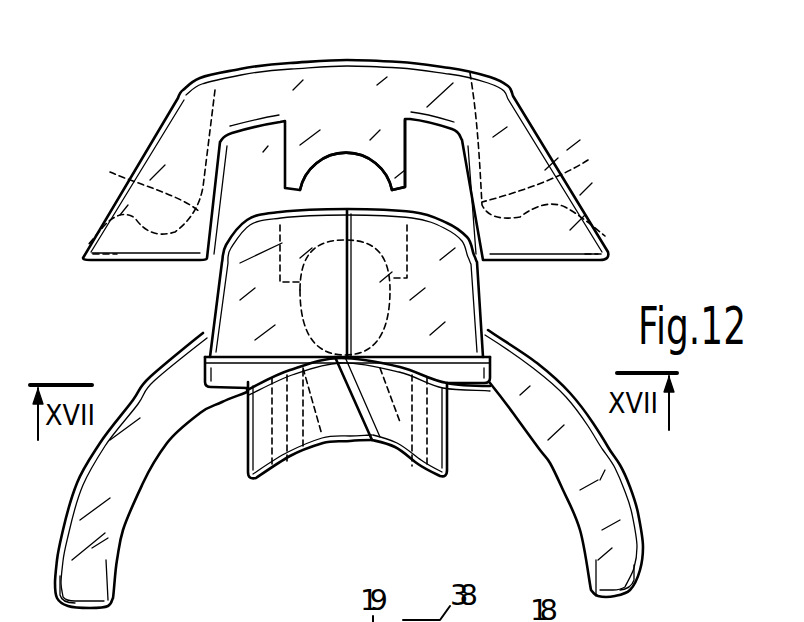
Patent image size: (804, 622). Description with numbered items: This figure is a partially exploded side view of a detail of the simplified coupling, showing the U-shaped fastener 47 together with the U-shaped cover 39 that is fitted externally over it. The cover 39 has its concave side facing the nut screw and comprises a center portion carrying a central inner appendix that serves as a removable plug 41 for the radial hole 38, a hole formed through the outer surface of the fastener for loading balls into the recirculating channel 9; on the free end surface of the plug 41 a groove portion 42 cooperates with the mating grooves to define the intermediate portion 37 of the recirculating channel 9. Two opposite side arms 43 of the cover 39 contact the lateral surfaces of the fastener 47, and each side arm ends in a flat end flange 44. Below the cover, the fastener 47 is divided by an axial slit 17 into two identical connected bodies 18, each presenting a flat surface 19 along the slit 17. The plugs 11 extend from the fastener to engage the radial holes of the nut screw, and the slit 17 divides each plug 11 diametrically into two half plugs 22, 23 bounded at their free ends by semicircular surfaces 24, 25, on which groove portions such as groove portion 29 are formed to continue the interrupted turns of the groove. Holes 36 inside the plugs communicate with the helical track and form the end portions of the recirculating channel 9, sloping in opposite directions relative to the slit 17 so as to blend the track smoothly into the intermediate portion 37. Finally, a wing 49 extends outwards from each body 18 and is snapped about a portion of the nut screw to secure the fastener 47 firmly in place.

The U-shaped cover 39 is at (576, 132).
The groove portion 42 is at (338, 162).
The removable plug 41 is at (377, 142).
The axial slit 17 is at (347, 205).
The side arms 43 is at (130, 178).
The flat end flange 44 is at (82, 236).
The U-shaped fastener 47 is at (650, 282).
The bodies 18 is at (213, 297).
The flat surface 19 is at (340, 243).
The recirculating channel 9 is at (440, 232).
The radial hole 38 is at (290, 212).
The intermediate portion 37 is at (408, 228).
The plugs 11 is at (242, 440).
The half plug 23 is at (247, 462).
The semicircular surface 25 is at (300, 462).
The groove portion 29 is at (266, 495).
The hole 36 is at (340, 458).
The half plug 22 is at (458, 446).
The semicircular surface 24 is at (410, 468).
The wing 49 is at (102, 578).